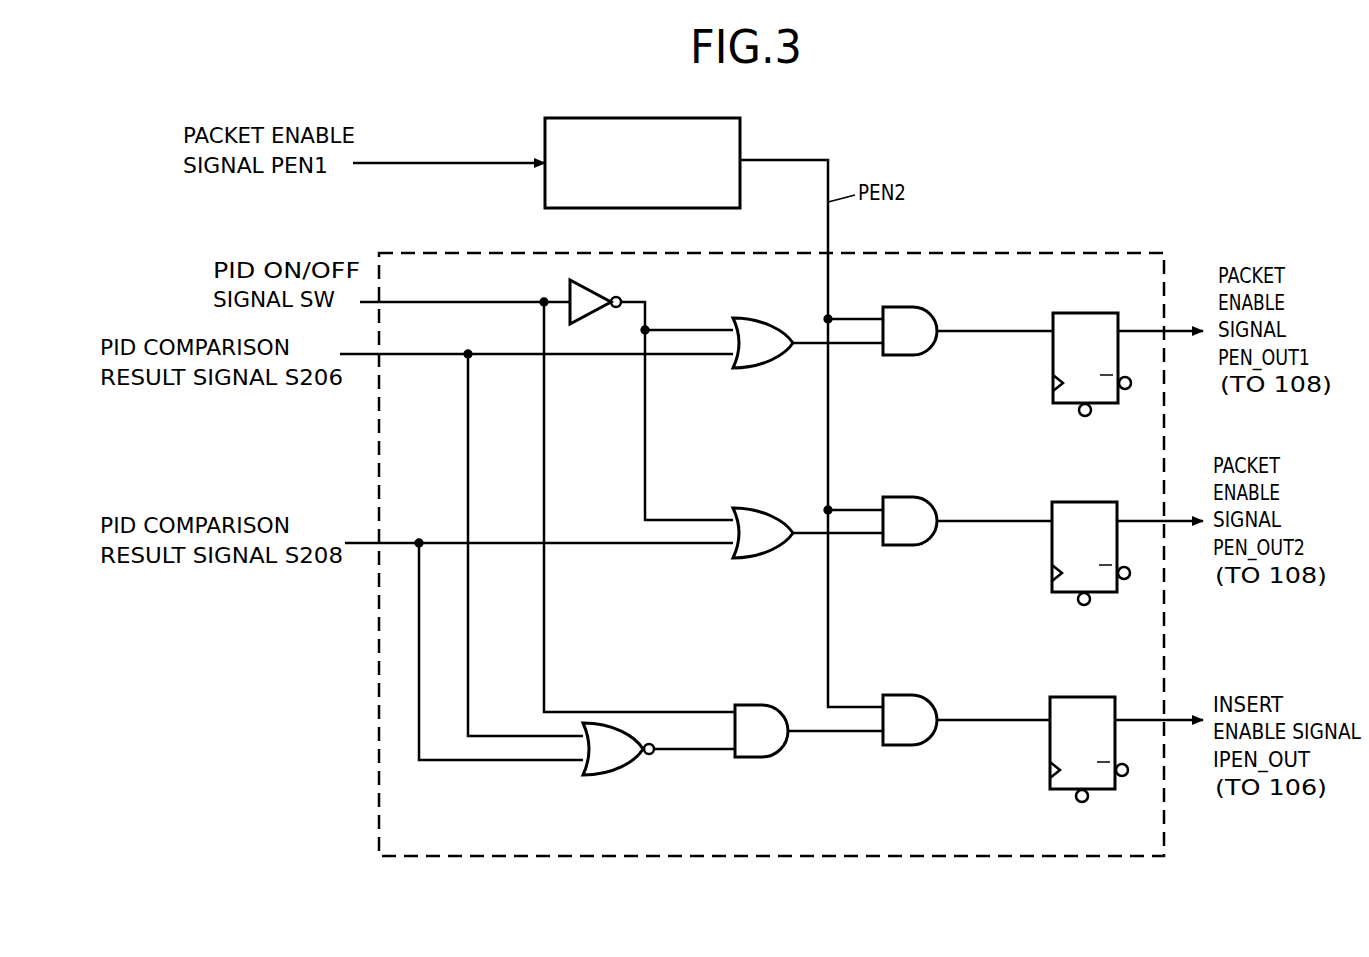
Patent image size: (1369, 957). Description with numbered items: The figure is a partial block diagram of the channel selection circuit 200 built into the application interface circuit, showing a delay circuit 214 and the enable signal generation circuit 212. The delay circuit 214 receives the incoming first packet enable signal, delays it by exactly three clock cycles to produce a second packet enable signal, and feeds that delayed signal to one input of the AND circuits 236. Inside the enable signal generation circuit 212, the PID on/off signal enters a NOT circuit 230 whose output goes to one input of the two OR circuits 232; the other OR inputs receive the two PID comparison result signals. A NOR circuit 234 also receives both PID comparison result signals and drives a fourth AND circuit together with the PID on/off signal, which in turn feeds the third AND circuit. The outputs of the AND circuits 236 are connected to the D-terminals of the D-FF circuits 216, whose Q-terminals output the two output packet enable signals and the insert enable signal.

The channel selection circuit 200 is at (1265, 138).
The delay circuit 214 is at (735, 118).
The NOT circuit 230 is at (597, 285).
The OR circuits 232 is at (755, 369).
The NOR circuit 234 is at (632, 776).
The AND circuits 236 is at (912, 306).
The D-FF circuits 216 is at (1068, 313).
The enable signal generation circuit 212 is at (1164, 826).